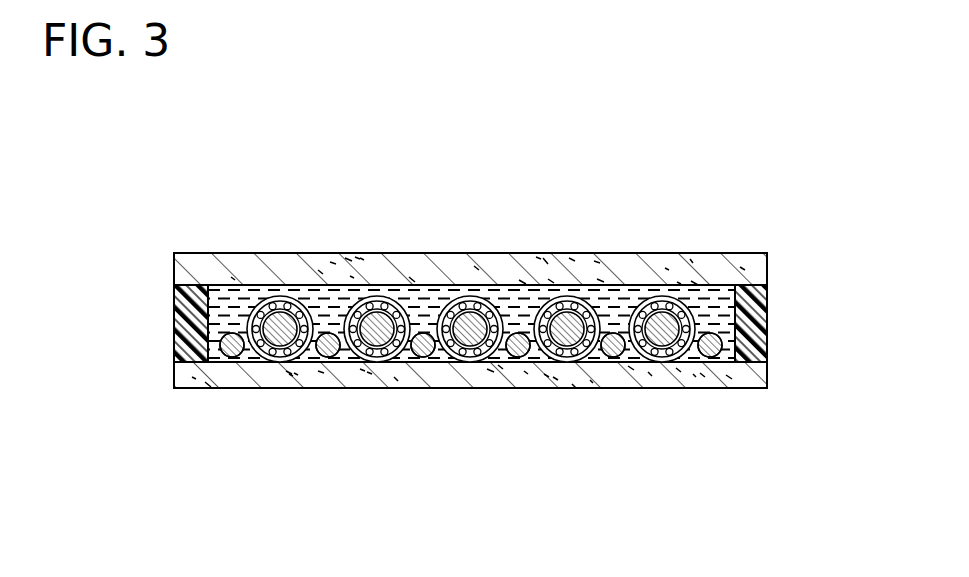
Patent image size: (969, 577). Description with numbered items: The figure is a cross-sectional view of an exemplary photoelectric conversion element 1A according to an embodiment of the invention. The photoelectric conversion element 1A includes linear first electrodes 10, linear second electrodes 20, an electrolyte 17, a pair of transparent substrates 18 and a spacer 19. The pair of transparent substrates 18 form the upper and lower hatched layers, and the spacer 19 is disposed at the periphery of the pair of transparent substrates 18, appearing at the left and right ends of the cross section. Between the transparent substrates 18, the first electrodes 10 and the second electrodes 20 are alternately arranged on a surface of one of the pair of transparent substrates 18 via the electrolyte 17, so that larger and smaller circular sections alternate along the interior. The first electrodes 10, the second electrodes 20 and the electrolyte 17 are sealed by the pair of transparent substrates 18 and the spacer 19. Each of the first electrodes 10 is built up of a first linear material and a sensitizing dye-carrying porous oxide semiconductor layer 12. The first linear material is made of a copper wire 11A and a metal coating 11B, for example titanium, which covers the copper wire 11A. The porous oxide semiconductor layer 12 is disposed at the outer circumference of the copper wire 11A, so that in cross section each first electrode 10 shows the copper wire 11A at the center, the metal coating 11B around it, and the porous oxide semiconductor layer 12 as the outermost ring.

The photoelectric conversion element 1A is at (700, 207).
The first electrode 10 is at (358, 462).
The copper wire 11A is at (263, 343).
The metal coating 11B is at (290, 353).
The porous oxide semiconductor layer 12 is at (305, 345).
The electrolyte 17 is at (428, 300).
The transparent substrate 18 is at (585, 262).
The spacer 19 is at (186, 320).
The second electrode 20 is at (420, 357).